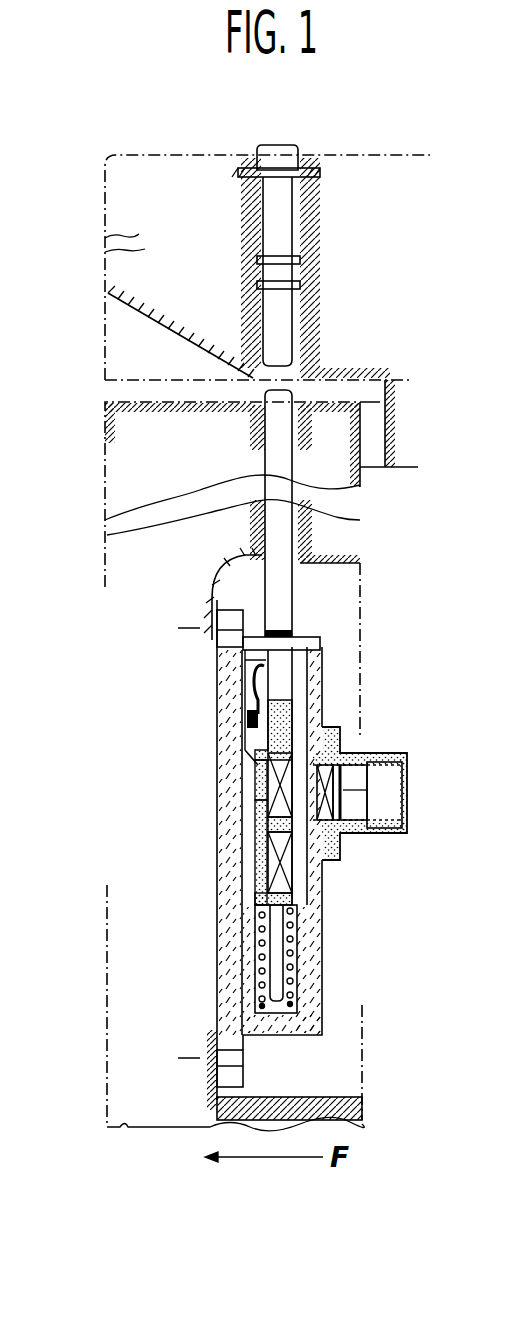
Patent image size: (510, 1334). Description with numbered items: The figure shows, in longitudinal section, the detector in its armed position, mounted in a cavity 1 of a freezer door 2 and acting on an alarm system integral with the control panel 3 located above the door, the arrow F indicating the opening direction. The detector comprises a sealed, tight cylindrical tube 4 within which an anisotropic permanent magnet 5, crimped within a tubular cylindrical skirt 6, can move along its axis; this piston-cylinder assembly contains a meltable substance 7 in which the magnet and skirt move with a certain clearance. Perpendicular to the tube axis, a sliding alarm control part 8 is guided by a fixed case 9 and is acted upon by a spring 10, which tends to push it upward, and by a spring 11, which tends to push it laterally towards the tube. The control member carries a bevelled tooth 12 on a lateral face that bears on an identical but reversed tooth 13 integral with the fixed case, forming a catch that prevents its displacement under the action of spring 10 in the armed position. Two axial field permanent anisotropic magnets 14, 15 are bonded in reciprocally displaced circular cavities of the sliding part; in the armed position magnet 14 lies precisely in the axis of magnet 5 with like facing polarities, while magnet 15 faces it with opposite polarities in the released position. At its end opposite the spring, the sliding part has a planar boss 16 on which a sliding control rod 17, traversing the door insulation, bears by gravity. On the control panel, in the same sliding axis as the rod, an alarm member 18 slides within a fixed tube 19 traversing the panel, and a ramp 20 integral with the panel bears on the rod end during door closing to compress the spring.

The cavity 1 is at (335, 1077).
The freezer door 2 is at (103, 450).
The control panel 3 is at (103, 198).
The cylindrical tube 4 is at (380, 832).
The anisotropic permanent magnet 5 is at (327, 790).
The tubular cylindrical skirt 6 is at (370, 797).
The meltable substance 7 is at (380, 813).
The sliding alarm control part 8 is at (283, 690).
The fixed case 9 is at (222, 735).
The spring 10 is at (290, 938).
The spring 11 is at (252, 676).
The bevelled tooth 12 is at (248, 797).
The reversed tooth 13 is at (248, 774).
The permanent anisotropic magnet 14 is at (290, 733).
The permanent anisotropic magnet 15 is at (290, 878).
The planar boss 16 is at (303, 637).
The sliding control rod 17 is at (276, 432).
The alarm member 18 is at (280, 148).
The fixed tube 19 is at (302, 320).
The ramp 20 is at (170, 332).